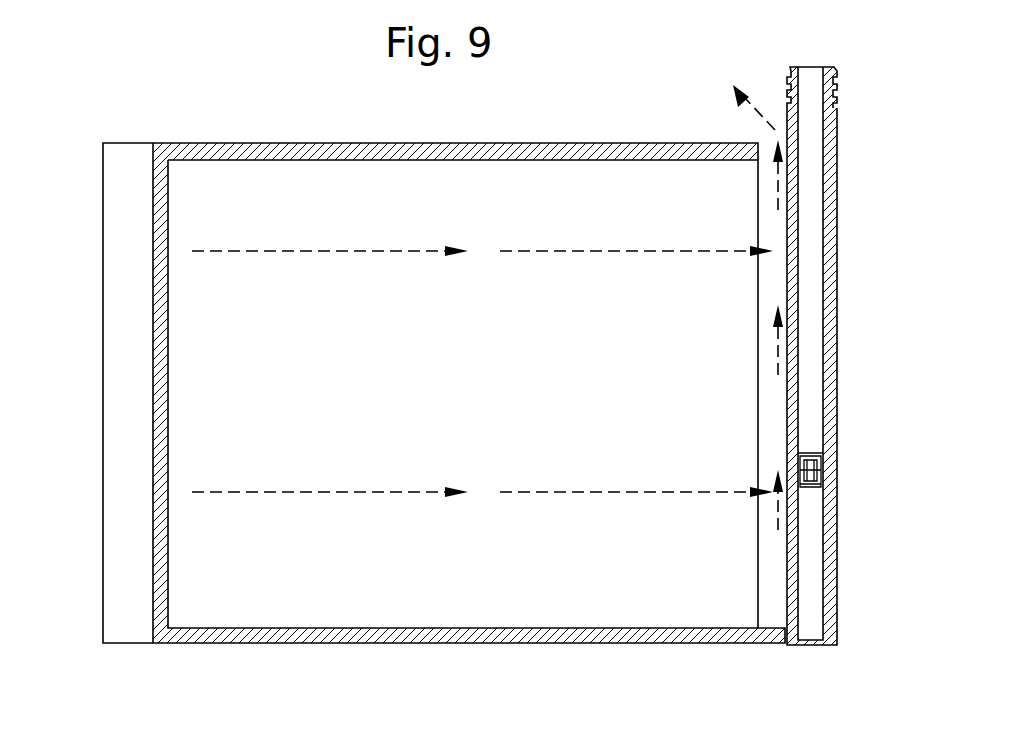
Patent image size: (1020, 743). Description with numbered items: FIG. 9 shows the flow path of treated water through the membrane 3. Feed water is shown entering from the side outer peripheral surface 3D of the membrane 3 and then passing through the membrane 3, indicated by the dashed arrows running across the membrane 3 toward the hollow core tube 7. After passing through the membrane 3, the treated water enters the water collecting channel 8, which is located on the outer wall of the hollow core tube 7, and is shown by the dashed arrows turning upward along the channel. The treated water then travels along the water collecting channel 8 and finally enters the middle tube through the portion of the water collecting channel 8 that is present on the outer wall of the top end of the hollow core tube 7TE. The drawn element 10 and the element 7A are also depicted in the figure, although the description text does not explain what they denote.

The housing 10 is at (405, 148).
The side outer peripheral surface 3D is at (153, 294).
The membrane 3 is at (222, 474).
The water collecting channel 8 is at (776, 607).
The hollow core tube 7 is at (838, 310).
The top end of the hollow core tube 7TE is at (838, 102).
The sensor 7A is at (818, 492).